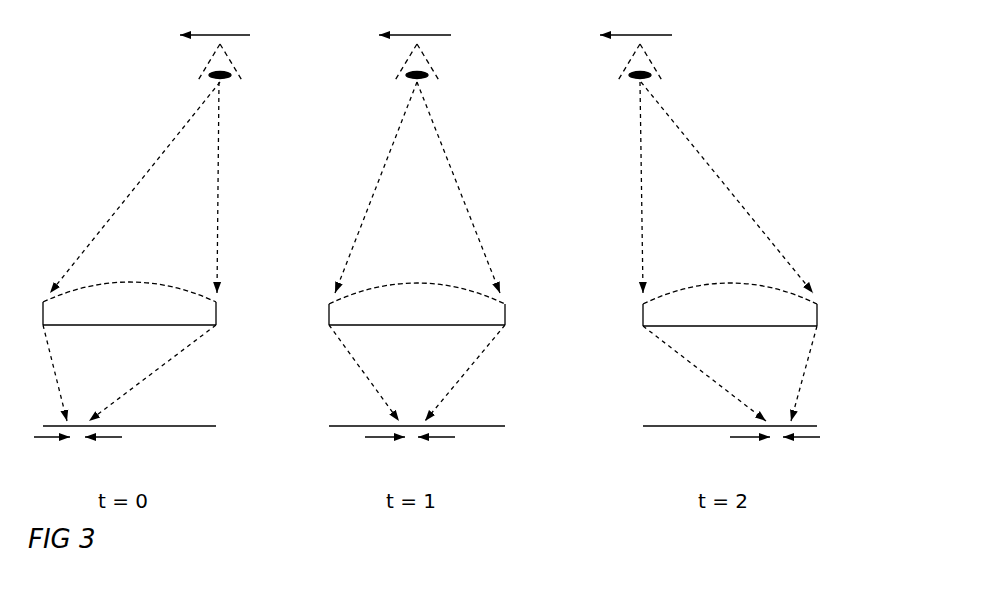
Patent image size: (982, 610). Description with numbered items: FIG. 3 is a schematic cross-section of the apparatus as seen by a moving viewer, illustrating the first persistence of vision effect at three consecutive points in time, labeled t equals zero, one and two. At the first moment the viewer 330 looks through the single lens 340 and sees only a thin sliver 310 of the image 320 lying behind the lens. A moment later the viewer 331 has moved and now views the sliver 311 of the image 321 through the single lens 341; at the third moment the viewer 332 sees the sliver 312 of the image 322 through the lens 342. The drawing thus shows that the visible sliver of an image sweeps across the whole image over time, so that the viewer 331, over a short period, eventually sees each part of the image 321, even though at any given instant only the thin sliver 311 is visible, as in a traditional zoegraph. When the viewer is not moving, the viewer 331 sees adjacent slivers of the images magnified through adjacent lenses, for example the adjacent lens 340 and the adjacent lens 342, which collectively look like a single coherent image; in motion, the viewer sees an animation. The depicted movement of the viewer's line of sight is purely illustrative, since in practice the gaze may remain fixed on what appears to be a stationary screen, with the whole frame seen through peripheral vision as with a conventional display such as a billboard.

The viewer 330 is at (235, 60).
The viewer 331 is at (433, 60).
The viewer 332 is at (656, 60).
The single lens 340 is at (156, 303).
The single lens 341 is at (446, 304).
The single lens 342 is at (758, 304).
The sliver 310 is at (78, 453).
The sliver 311 is at (410, 453).
The sliver 312 is at (775, 453).
The image 320 is at (141, 447).
The image 321 is at (437, 447).
The image 322 is at (722, 447).